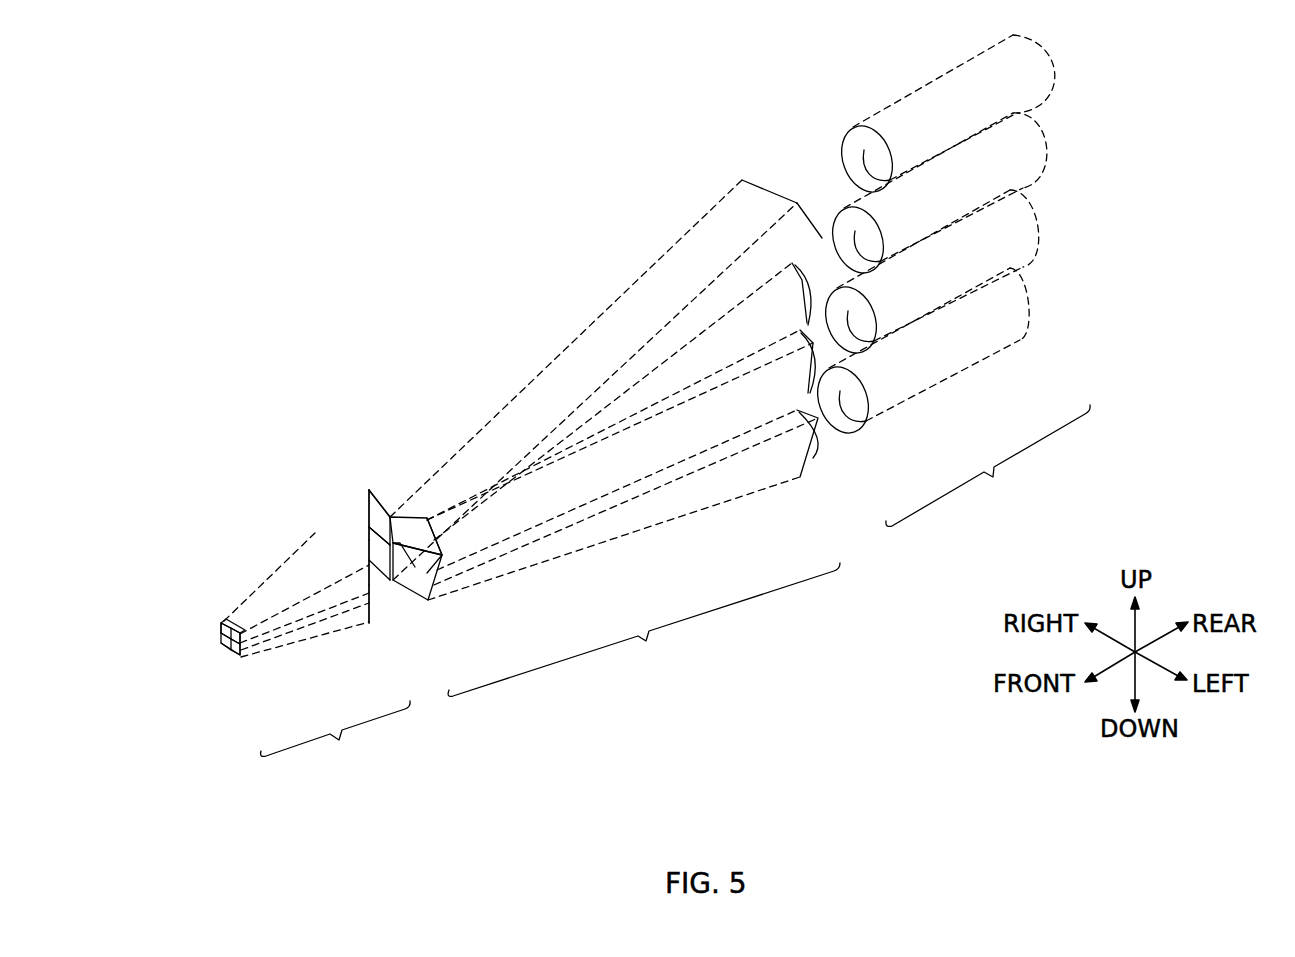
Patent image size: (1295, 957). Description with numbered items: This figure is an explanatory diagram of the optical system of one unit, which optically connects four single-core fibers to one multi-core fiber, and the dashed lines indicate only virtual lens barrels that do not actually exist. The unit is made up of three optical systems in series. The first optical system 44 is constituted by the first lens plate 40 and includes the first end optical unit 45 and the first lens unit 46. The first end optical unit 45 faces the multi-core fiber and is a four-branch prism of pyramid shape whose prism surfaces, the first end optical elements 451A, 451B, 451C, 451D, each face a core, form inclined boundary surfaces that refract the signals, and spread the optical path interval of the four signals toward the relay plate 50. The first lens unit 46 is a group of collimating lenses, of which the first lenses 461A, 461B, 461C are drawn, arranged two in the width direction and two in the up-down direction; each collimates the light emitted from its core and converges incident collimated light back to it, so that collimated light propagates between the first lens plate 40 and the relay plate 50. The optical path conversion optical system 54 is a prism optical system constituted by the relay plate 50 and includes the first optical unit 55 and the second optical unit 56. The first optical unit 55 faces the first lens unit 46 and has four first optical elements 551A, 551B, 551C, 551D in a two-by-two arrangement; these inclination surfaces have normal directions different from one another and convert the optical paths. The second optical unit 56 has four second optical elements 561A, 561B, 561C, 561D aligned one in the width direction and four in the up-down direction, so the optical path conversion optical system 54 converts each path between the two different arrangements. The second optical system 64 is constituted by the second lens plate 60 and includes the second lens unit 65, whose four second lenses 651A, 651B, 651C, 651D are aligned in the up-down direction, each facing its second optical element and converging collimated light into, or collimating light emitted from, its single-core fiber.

The first lens plate 40 is at (336, 728).
The first optical system 44 is at (336, 740).
The first end optical unit 45 is at (185, 677).
The first end optical element 451A is at (226, 641).
The first end optical element 451B is at (221, 628).
The first end optical element 451C is at (231, 650).
The first end optical element 451D is at (240, 658).
The first lens unit 46 is at (383, 599).
The first lens 461A is at (362, 560).
The first lens 461B is at (368, 558).
The first lens 461C is at (372, 603).
The relay plate 50 is at (644, 629).
The optical path conversion optical system 54 is at (644, 629).
The first optical unit 55 is at (404, 508).
The first optical element 551A is at (415, 567).
The first optical element 551B is at (371, 487).
The first optical element 551C is at (368, 528).
The first optical element 551D is at (427, 573).
The second optical unit 56 is at (687, 321).
The second optical element 561A is at (757, 186).
The second optical element 561B is at (792, 263).
The second optical element 561C is at (800, 331).
The second optical element 561D is at (797, 410).
The second lens plate 60 is at (988, 465).
The second optical system 64 is at (988, 465).
The second lens unit 65 is at (1009, 278).
The second lens 651A is at (890, 180).
The second lens 651B is at (881, 261).
The second lens 651C is at (874, 341).
The second lens 651D is at (981, 354).